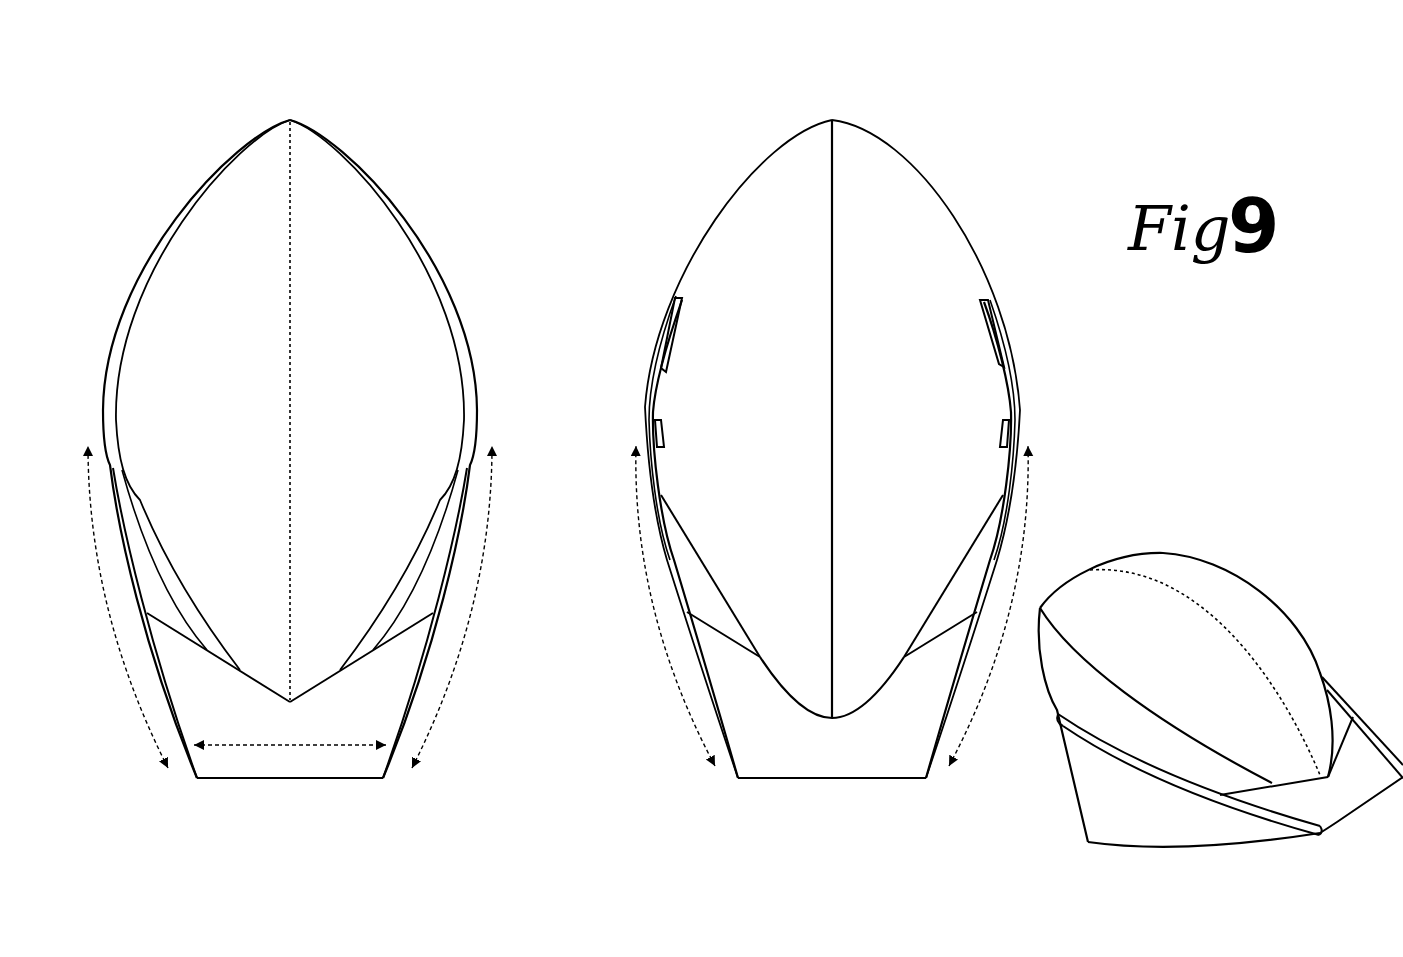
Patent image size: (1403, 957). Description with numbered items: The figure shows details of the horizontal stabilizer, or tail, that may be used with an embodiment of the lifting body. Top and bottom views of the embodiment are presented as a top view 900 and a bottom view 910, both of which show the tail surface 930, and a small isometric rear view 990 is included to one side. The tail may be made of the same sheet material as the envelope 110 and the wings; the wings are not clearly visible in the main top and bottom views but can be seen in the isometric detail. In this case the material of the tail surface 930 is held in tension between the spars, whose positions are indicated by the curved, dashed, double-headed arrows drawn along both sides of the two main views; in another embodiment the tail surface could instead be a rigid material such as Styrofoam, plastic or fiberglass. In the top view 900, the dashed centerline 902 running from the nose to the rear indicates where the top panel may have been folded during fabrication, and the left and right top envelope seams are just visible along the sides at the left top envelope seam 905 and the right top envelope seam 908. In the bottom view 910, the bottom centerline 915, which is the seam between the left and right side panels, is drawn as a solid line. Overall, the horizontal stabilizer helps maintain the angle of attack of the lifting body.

The envelope 110 is at (692, 222).
The top view 900 is at (172, 141).
The left top envelope seam 905 is at (196, 449).
The right top envelope seam 908 is at (383, 449).
The dashed centerline 902 is at (275, 411).
The tail surface 930 is at (235, 788).
The bottom view 910 is at (943, 138).
The bottom centerline 915 is at (818, 419).
The isometric rear view 990 is at (1052, 800).